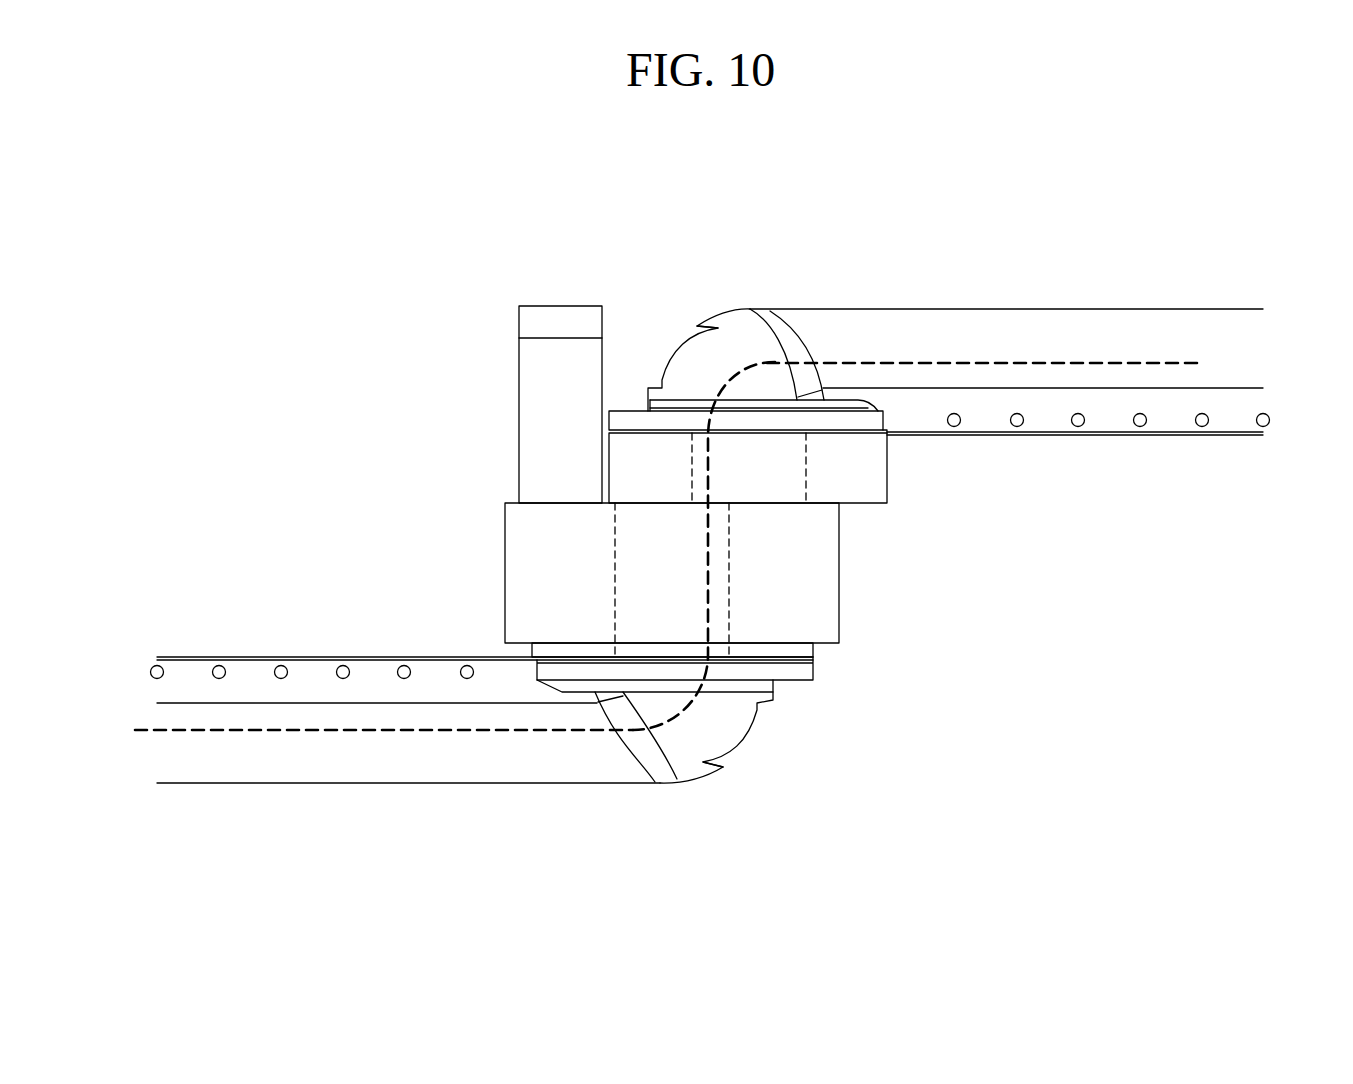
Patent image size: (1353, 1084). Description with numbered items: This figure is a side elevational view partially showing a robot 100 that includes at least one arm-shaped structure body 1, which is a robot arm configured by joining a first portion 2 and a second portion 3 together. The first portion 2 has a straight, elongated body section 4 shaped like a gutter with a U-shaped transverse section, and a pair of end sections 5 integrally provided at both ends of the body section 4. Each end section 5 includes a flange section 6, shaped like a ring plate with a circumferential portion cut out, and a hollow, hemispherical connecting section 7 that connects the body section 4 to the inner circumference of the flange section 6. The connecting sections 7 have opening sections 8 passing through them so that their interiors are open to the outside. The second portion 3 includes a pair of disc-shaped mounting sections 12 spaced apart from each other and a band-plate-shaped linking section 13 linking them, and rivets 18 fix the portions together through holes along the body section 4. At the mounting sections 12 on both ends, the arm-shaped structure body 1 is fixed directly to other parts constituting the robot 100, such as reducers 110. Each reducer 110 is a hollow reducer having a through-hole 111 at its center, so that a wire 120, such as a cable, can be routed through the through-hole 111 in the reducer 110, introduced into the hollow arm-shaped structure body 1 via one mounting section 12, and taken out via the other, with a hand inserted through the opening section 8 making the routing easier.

The robot 100 is at (385, 190).
The arm-shaped structure body 1 is at (1143, 252).
The first portion 2 is at (1056, 309).
The second portion 3 is at (1106, 463).
The body section 4 is at (1000, 325).
The end section 5 is at (712, 320).
The flange section 6 is at (609, 413).
The connecting section 7 is at (738, 330).
The opening section 8 is at (673, 367).
The mounting section 12 is at (850, 437).
The linking section 13 is at (1050, 437).
The rivet 18 is at (1202, 428).
The reducer 110 is at (505, 553).
The through-hole 111 is at (692, 452).
The wire 120 is at (880, 363).